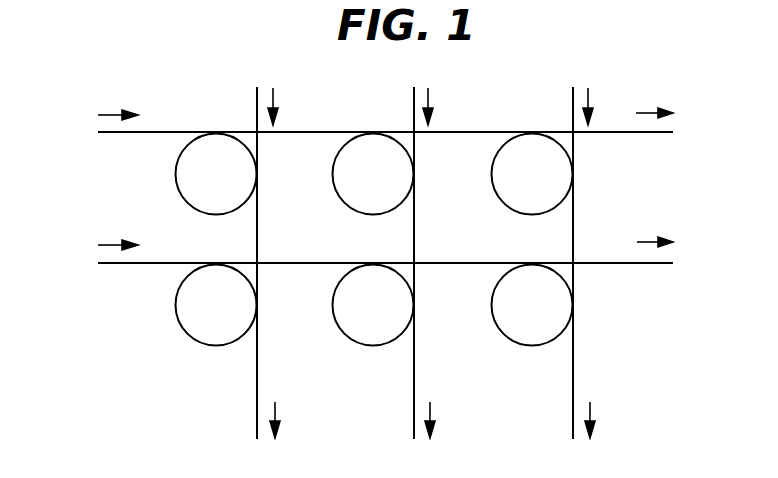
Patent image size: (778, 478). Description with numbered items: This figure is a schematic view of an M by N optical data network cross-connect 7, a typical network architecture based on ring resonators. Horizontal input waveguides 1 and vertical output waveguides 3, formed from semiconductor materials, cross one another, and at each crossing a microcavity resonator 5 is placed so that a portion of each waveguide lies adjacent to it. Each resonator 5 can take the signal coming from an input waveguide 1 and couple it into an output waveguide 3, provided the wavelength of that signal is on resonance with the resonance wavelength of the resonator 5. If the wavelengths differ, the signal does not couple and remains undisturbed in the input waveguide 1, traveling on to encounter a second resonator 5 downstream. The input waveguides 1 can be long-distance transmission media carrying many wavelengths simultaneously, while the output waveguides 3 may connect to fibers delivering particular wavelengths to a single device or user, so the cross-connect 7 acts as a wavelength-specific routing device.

The input waveguide 1 is at (160, 132).
The output waveguide 3 is at (257, 387).
The microcavity resonator 5 is at (198, 212).
The optical data network cross-connect 7 is at (374, 257).